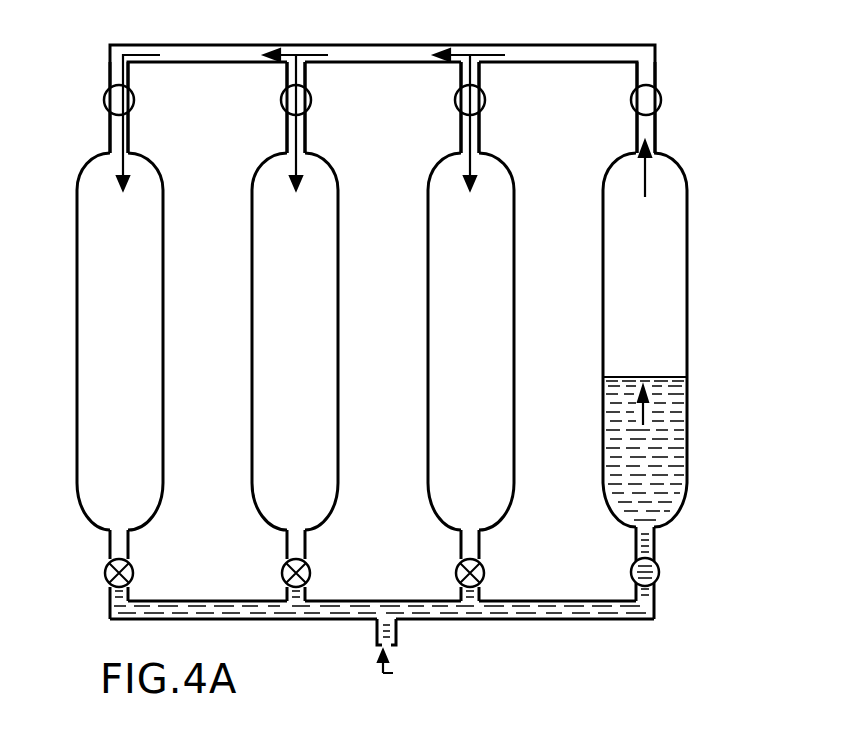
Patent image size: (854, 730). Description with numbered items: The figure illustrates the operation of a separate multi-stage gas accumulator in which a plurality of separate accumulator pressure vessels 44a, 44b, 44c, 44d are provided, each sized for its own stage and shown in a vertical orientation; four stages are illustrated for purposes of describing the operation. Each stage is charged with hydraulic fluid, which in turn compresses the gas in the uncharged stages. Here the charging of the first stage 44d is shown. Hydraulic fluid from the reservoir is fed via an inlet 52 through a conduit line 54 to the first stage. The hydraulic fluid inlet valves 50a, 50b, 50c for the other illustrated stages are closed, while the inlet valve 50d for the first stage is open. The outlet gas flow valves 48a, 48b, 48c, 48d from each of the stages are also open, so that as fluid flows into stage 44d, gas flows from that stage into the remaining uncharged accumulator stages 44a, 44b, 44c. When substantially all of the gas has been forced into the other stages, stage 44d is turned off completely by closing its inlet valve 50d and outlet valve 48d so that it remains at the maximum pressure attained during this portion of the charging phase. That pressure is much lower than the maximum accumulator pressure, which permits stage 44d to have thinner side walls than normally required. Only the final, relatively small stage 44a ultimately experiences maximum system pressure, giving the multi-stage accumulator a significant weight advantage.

The accumulator pressure vessel stage 44a is at (77, 300).
The accumulator pressure vessel stage 44b is at (252, 298).
The accumulator pressure vessel stage 44c is at (428, 298).
The accumulator pressure vessel stage 44d is at (603, 300).
The outlet gas flow valve 48a is at (107, 102).
The outlet gas flow valve 48b is at (283, 103).
The outlet gas flow valve 48c is at (457, 102).
The outlet gas flow valve 48d is at (632, 103).
The hydraulic fluid inlet valve 50a is at (106, 576).
The hydraulic fluid inlet valve 50b is at (282, 575).
The hydraulic fluid inlet valve 50c is at (457, 573).
The inlet valve 50d is at (658, 574).
The inlet 52 is at (375, 628).
The conduit line 54 is at (436, 621).